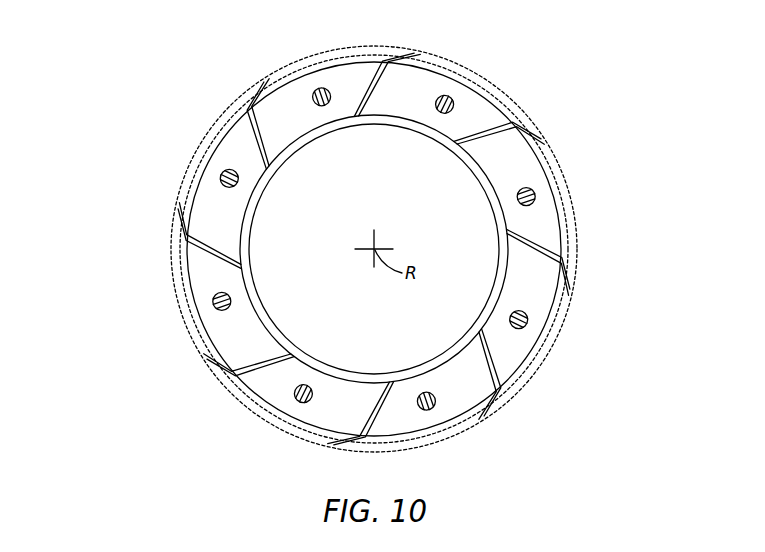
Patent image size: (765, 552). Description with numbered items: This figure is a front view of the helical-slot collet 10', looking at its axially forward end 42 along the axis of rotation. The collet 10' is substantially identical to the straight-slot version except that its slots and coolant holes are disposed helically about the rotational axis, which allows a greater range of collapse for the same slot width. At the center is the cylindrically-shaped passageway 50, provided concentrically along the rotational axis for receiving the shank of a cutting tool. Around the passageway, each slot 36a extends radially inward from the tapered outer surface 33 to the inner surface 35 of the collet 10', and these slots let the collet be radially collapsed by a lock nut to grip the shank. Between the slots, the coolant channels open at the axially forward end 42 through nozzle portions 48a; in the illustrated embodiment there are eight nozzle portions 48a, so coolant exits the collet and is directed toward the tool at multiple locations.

The collet 10' is at (394, 245).
The outer surface 33 is at (308, 63).
The inner surface 35 is at (421, 131).
The slot 36a is at (207, 363).
The axially forward end 42 is at (551, 229).
The nozzle portion 48a is at (450, 94).
The passageway 50 is at (464, 243).